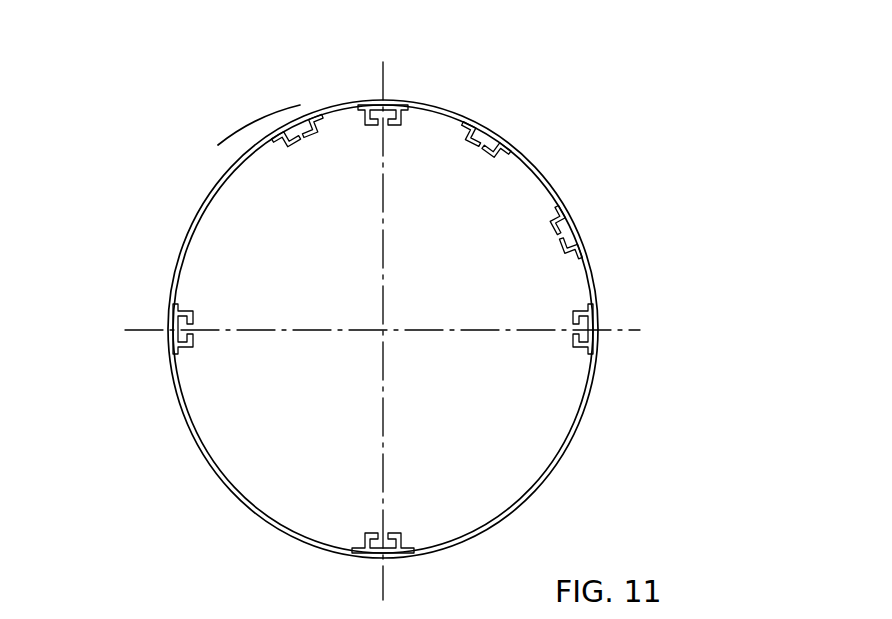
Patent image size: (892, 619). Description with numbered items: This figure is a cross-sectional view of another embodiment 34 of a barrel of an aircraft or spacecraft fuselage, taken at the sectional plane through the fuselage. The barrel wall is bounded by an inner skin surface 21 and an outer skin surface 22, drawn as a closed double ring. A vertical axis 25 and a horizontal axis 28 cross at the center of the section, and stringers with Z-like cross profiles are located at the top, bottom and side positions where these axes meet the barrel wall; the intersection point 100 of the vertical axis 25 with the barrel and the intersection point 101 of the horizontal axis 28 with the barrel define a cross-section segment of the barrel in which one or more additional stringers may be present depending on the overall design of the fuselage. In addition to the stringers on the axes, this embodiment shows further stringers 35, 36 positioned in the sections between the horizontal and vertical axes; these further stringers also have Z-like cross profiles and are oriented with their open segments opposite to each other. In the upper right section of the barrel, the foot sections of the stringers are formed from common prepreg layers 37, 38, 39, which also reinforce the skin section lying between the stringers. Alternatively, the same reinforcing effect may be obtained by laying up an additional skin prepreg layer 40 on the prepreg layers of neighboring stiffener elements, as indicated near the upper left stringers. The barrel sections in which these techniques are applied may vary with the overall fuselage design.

The inner skin surface 21 is at (205, 462).
The outer skin surface 22 is at (197, 213).
The vertical axis 25 is at (383, 316).
The horizontal axis 28 is at (365, 329).
The barrel embodiment 34 is at (203, 105).
The further stringer 35 is at (473, 163).
The further stringer 36 is at (290, 163).
The common prepreg layer 37 is at (438, 122).
The common prepreg layer 38 is at (523, 177).
The common prepreg layer 39 is at (578, 283).
The additional skin prepreg layer 40 is at (336, 118).
The intersection point 100 is at (386, 558).
The intersection point 101 is at (598, 330).